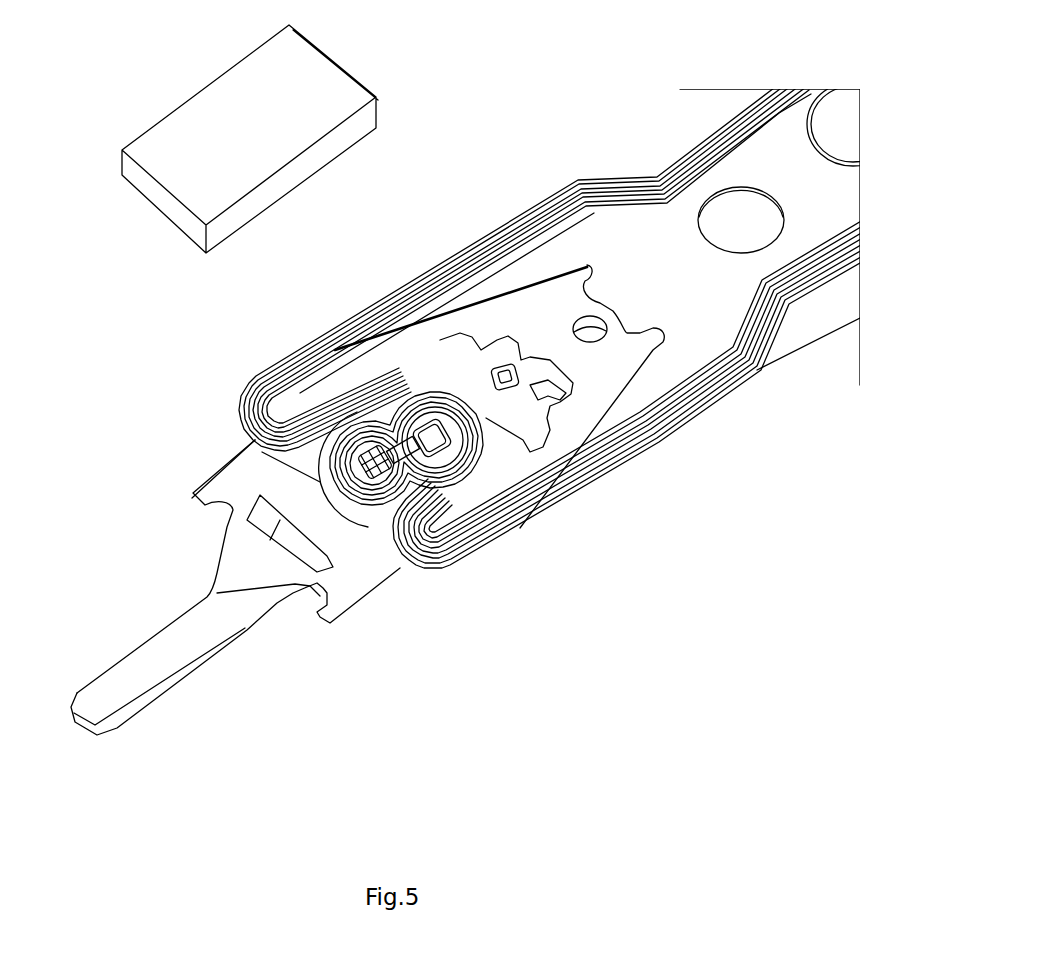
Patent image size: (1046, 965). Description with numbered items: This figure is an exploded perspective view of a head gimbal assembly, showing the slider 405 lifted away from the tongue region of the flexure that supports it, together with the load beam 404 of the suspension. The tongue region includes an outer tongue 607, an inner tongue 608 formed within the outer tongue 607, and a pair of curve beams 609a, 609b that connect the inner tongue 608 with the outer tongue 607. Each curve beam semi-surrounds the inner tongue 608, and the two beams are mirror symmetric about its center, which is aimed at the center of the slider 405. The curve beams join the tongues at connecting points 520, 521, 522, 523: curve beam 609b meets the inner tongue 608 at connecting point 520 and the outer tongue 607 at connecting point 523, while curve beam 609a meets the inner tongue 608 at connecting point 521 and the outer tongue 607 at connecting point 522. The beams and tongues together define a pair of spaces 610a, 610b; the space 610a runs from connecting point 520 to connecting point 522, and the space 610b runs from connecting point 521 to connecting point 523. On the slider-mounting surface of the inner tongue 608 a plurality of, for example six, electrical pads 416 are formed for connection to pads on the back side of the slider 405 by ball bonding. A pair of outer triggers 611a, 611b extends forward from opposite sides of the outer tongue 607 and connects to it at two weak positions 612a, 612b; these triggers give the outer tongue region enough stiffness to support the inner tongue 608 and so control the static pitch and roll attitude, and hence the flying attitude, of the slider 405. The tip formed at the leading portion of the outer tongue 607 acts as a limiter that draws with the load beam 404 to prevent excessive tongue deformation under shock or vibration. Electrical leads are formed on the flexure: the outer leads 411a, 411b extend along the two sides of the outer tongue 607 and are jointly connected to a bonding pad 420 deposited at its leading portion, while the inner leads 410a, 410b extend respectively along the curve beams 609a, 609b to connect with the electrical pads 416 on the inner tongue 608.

The load beam 404 is at (220, 623).
The slider 405 is at (167, 145).
The electrical pads 416 is at (390, 467).
The bonding pad 420 is at (503, 377).
The connecting point 520 is at (340, 425).
The connecting point 521 is at (427, 500).
The connecting point 522 is at (388, 425).
The connecting point 523 is at (397, 497).
The outer tongue 607 is at (438, 380).
The inner tongue 608 is at (290, 443).
The curve beam 609a is at (443, 493).
The curve beam 609b is at (370, 497).
The space 610a is at (457, 460).
The space 610b is at (243, 393).
The outer trigger 611a is at (515, 263).
The outer trigger 611b is at (597, 428).
The weak position 612a is at (398, 590).
The weak position 612b is at (323, 467).
The inner lead 410a is at (352, 447).
The inner lead 410b is at (378, 525).
The outer lead 411a is at (413, 353).
The outer lead 411b is at (480, 437).